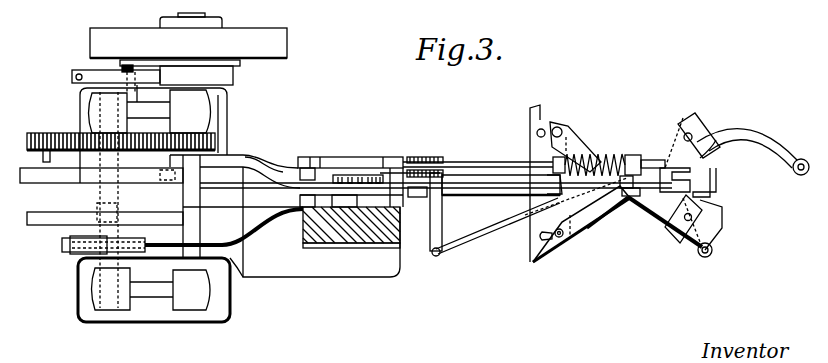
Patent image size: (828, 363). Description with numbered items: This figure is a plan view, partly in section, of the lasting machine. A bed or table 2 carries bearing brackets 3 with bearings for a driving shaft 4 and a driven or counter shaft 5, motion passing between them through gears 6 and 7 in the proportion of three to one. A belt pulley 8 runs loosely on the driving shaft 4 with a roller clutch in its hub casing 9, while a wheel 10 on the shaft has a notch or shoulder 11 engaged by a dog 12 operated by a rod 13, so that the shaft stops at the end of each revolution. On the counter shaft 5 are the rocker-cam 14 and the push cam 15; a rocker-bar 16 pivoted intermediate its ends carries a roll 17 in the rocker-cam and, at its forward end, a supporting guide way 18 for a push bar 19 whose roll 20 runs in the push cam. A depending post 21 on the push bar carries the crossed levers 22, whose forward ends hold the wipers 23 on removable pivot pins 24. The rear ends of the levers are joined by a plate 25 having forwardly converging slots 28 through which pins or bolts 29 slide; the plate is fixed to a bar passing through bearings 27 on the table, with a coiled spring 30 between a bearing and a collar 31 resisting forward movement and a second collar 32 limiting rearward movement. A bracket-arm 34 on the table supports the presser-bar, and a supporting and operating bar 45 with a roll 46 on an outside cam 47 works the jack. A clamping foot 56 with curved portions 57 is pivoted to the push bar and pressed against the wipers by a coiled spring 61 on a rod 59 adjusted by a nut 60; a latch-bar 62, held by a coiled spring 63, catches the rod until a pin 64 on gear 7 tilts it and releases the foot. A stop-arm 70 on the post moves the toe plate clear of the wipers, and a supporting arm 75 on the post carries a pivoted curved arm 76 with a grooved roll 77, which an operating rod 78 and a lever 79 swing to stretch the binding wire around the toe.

The bed or table 2 is at (285, 216).
The bearing brackets 3 is at (200, 113).
The driving shaft 4 is at (200, 232).
The driven or counter shaft 5 is at (100, 293).
The gear 6 is at (218, 138).
The gear 7 is at (41, 133).
The belt pulley 8 is at (277, 42).
The hub casing 9 is at (233, 63).
The wheel 10 is at (228, 80).
The notch or shoulder 11 is at (153, 70).
The dog 12 is at (80, 68).
The rod 13 is at (75, 78).
The rocker-cam 14 is at (43, 222).
The push cam 15 is at (45, 178).
The rocker-bar 16 is at (266, 207).
The roll 17 is at (97, 212).
The supporting guide way 18 is at (475, 187).
The push bar 19 is at (258, 185).
The roll 20 is at (160, 173).
The depending post 21 is at (627, 205).
The crossed levers 22 is at (643, 154).
The wipers 23 is at (718, 208).
The pivot pins 24 is at (690, 133).
The plate 25 is at (532, 124).
The bearings 27 is at (316, 167).
The forwardly converging slots 28 is at (544, 123).
The pins or bolts 29 is at (563, 238).
The coiled spring 30 is at (337, 177).
The collar 31 is at (328, 207).
The second collar 32 is at (428, 212).
The bracket-arm 34 is at (350, 248).
The supporting and operating bar 45 is at (243, 277).
The roll 46 is at (80, 253).
The outside cam 47 is at (63, 250).
The clamping foot 56 is at (667, 160).
The curved portions 57 is at (713, 146).
The rod 59 is at (552, 161).
The adjusting nut 60 is at (550, 177).
The coiled spring 61 is at (574, 150).
The latch-bar 62 is at (458, 162).
The coiled spring 63 is at (417, 156).
The pin 64 is at (43, 157).
The stop-arm 70 is at (668, 201).
The supporting arm 75 is at (702, 257).
The curved arm 76 is at (772, 138).
The grooved roll 77 is at (801, 176).
The operating rod 78 is at (508, 233).
The lever 79 is at (436, 258).